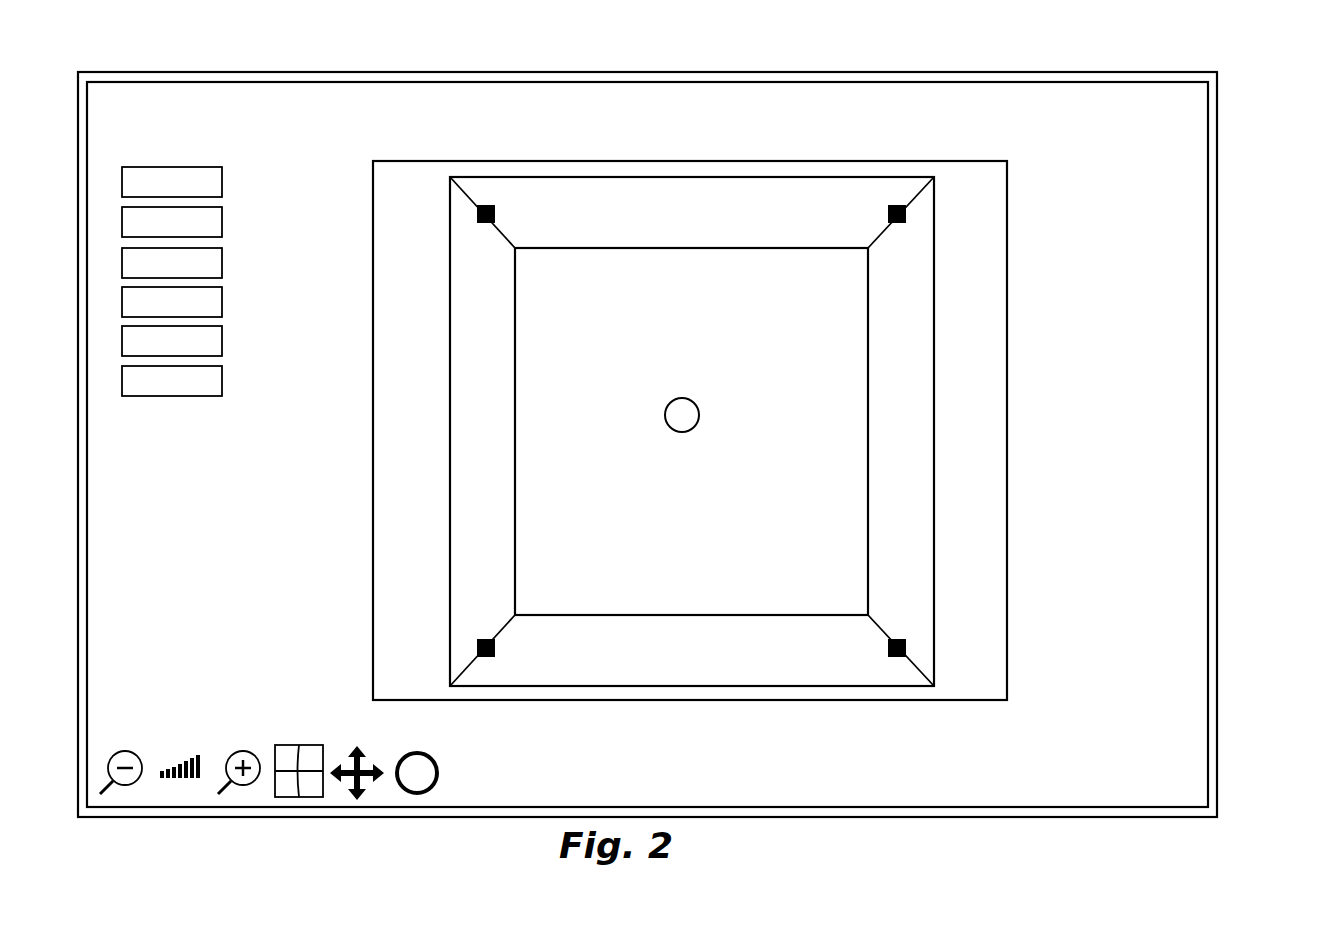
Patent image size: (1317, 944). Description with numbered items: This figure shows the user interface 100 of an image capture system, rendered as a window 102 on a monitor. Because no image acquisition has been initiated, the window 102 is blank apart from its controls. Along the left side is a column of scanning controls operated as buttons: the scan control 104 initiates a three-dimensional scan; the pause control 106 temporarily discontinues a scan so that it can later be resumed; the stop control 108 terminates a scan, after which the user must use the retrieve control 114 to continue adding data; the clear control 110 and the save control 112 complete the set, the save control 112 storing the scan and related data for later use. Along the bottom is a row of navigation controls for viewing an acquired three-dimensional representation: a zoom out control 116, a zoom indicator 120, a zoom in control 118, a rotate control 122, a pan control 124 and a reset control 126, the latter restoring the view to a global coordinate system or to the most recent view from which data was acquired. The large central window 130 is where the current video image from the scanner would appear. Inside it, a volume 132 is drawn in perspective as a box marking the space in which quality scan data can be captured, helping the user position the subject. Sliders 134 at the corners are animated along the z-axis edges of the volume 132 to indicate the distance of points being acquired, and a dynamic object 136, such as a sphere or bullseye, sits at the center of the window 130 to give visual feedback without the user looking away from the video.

The user interface 100 is at (1226, 83).
The window 102 is at (1124, 129).
The scan control 104 is at (222, 189).
The pause control 106 is at (222, 229).
The stop control 108 is at (222, 270).
The clear control 110 is at (222, 309).
The save control 112 is at (222, 348).
The retrieve control 114 is at (222, 388).
The zoom out control 116 is at (135, 746).
The zoom in control 118 is at (253, 745).
The zoom indicator 120 is at (201, 756).
The rotate control 122 is at (303, 744).
The pan control 124 is at (353, 762).
The reset control 126 is at (443, 730).
The window 130 is at (1008, 368).
The volume 132 is at (935, 286).
The sliders 134 is at (496, 213).
The dynamic object 136 is at (694, 401).